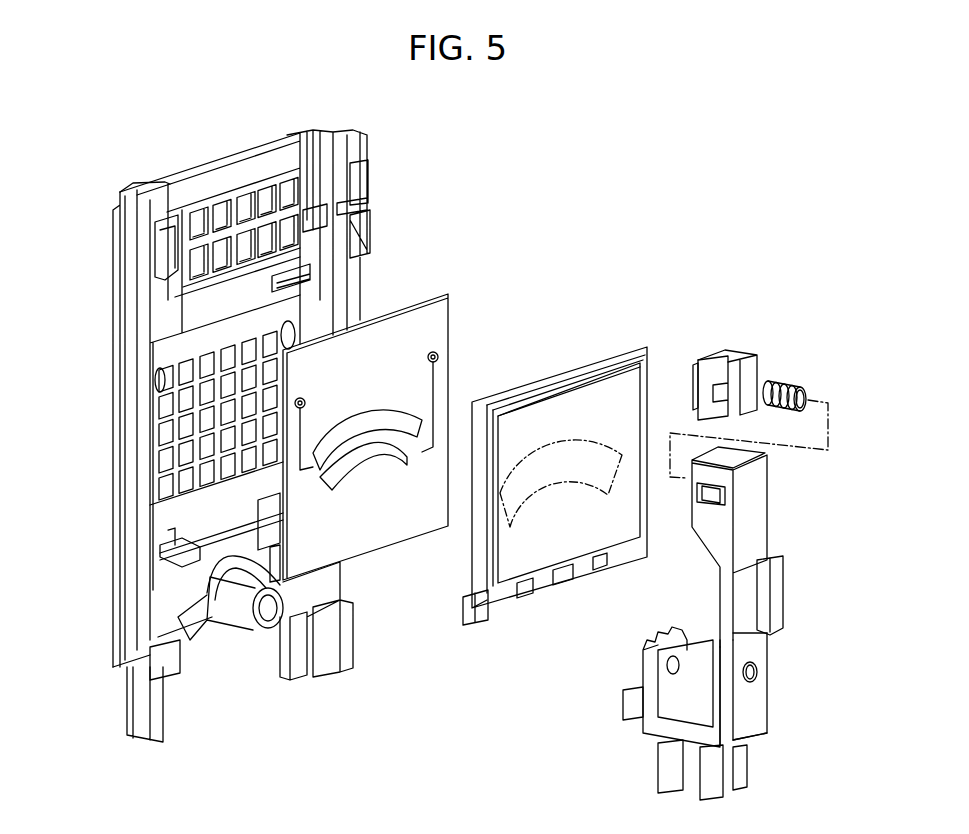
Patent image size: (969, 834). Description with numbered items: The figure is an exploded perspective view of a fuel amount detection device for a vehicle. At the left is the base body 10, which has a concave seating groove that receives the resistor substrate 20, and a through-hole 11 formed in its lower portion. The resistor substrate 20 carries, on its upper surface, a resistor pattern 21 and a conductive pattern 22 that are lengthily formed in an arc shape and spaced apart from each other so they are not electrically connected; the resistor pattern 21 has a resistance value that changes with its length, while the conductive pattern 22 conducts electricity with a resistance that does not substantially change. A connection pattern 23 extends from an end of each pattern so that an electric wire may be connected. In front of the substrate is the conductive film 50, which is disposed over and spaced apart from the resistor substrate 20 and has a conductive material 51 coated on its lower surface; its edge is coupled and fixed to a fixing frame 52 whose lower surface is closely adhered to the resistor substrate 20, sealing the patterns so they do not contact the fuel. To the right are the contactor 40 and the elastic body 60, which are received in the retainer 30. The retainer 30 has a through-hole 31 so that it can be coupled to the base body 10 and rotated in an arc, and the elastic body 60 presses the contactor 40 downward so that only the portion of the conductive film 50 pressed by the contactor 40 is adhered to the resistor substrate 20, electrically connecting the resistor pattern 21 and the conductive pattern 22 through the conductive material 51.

The base body 10 is at (375, 170).
The through-hole 11 is at (282, 640).
The resistor substrate 20 is at (289, 417).
The resistor pattern 21 is at (379, 416).
The conductive pattern 22 is at (387, 452).
The connection pattern 23 is at (438, 360).
The retainer 30 is at (699, 623).
The through-hole 31 is at (750, 673).
The contactor 40 is at (757, 356).
The conductive film 50 is at (558, 456).
The conductive material 51 is at (550, 495).
The fixing frame 52 is at (553, 372).
The elastic body 60 is at (800, 383).